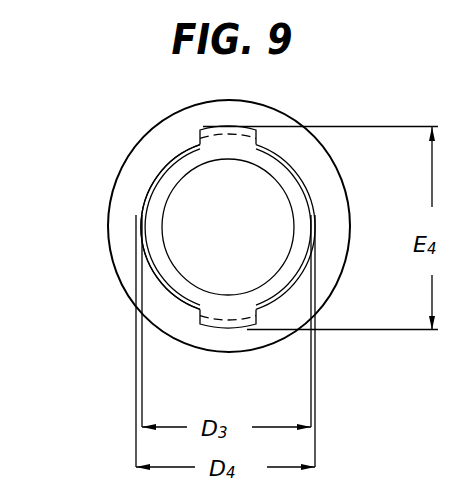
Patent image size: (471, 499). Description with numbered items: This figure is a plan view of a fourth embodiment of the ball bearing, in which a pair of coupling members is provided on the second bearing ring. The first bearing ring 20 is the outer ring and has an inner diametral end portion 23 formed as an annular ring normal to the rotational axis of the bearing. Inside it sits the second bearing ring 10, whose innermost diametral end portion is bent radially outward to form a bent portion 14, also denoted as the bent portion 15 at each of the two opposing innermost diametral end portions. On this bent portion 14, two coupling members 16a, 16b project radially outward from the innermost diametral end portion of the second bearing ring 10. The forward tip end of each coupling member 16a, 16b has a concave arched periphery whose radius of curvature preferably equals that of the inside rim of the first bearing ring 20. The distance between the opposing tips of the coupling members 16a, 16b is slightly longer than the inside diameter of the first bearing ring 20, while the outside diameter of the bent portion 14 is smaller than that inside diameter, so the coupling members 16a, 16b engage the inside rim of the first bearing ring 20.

The second bearing ring 10 is at (297, 225).
The bent portion 14 is at (315, 198).
The bent portion 15 is at (143, 212).
The coupling member 16a is at (233, 127).
The coupling member 16b is at (217, 324).
The first bearing ring 20 is at (318, 165).
The inner diametral end portion 23 is at (163, 160).